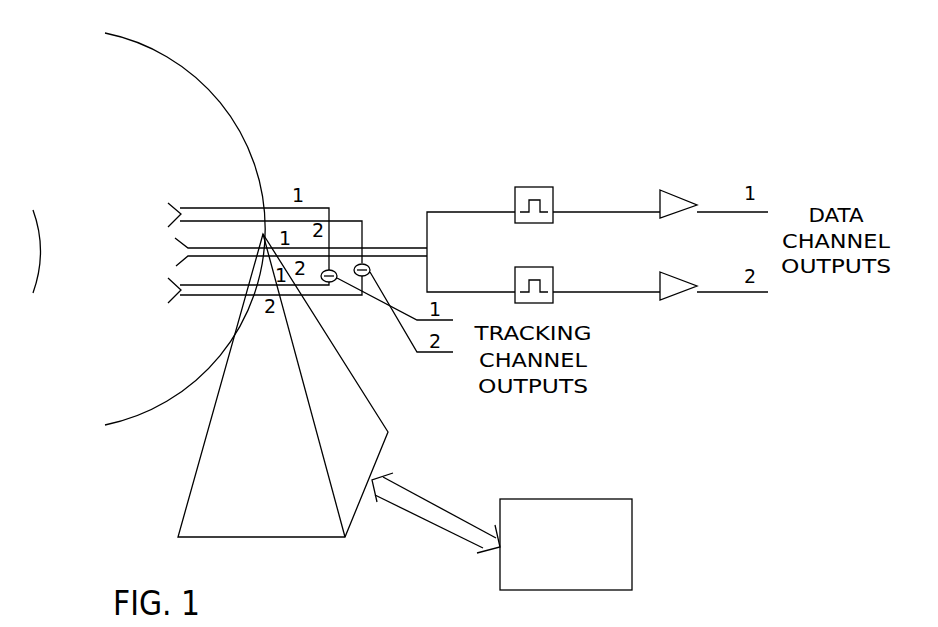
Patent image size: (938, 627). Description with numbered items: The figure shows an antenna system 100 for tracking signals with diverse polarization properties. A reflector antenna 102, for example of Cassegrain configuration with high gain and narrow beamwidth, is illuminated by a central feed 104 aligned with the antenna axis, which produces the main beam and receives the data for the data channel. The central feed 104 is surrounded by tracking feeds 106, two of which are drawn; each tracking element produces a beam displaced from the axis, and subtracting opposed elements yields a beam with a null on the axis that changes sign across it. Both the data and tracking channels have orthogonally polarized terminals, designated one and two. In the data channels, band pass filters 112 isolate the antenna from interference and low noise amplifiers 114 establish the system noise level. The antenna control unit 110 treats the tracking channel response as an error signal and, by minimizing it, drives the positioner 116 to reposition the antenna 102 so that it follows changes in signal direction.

The antenna system 100 is at (346, 51).
The reflector antenna 102 is at (180, 65).
The central feed 104 is at (140, 257).
The tracking feeds 106 is at (140, 220).
The antenna control unit 110 is at (542, 498).
The band pass filters 112 is at (515, 187).
The low noise amplifiers 114 is at (660, 190).
The positioner 116 is at (372, 404).